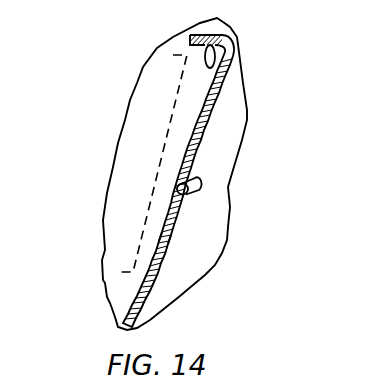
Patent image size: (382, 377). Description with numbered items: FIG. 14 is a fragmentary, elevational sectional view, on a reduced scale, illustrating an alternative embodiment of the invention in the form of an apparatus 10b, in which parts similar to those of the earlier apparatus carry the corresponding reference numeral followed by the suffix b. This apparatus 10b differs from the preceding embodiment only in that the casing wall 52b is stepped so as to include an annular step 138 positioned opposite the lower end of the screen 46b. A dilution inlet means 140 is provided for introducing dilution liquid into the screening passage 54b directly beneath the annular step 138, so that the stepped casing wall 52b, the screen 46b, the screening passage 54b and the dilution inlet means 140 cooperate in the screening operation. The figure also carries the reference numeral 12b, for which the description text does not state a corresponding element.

The apparatus 10b is at (234, 53).
The body 12b is at (152, 279).
The screen 46b is at (163, 157).
The casing wall 52b is at (205, 133).
The screening passage 54b is at (162, 233).
The annular step 138 is at (200, 174).
The dilution inlet means 140 is at (193, 202).